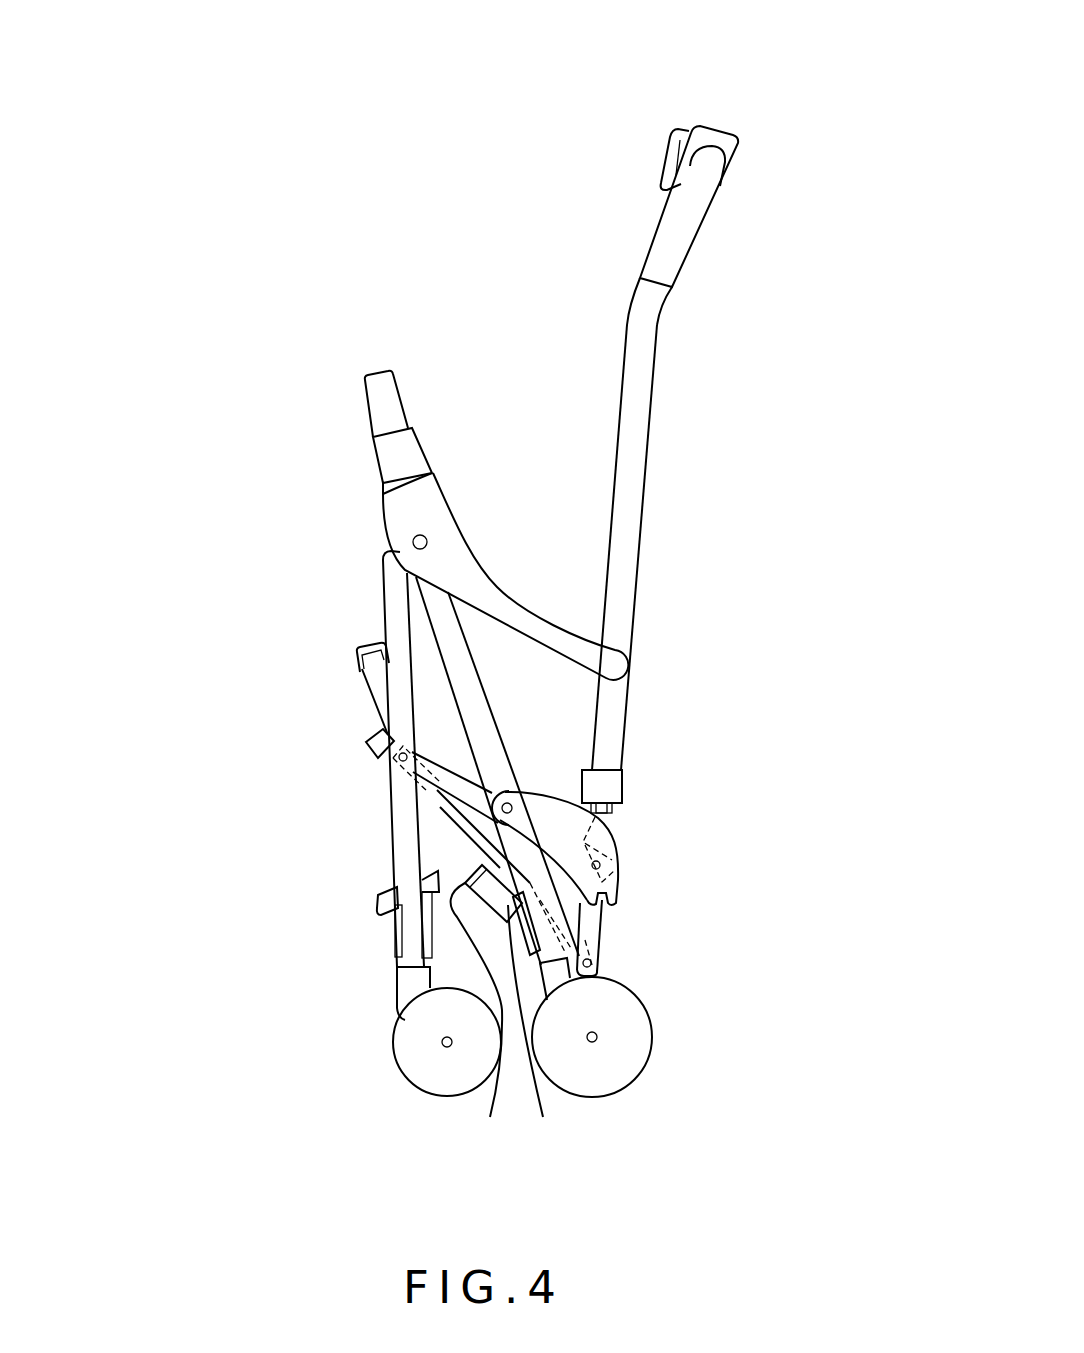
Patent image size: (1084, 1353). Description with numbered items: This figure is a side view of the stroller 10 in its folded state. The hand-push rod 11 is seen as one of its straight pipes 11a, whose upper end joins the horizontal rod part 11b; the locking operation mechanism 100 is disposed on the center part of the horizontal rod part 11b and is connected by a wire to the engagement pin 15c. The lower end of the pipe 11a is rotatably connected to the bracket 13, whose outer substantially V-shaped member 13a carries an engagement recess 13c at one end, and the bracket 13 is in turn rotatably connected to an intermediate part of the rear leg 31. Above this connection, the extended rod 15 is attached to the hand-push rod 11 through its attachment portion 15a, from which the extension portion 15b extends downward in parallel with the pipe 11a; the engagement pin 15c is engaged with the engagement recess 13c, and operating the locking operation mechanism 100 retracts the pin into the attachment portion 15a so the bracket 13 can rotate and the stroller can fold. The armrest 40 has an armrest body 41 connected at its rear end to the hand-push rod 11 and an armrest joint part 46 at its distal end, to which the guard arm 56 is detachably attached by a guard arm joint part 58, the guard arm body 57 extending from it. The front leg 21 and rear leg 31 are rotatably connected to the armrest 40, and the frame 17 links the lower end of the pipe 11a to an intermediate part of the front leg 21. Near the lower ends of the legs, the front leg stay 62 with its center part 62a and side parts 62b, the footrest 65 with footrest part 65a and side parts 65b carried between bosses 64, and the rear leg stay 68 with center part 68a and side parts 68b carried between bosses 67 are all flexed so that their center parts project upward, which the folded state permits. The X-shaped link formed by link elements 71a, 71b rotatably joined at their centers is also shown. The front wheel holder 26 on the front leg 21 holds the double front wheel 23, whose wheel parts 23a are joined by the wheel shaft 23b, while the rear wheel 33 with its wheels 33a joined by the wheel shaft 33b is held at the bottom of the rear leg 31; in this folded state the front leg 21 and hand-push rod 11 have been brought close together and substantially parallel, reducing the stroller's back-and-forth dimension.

The locking operation mechanism 100 is at (722, 130).
The stroller 10 is at (413, 332).
The hand-push rod 11 is at (657, 345).
The pipe 11a is at (637, 421).
The horizontal rod part 11b is at (697, 230).
The guard arm 56 is at (366, 413).
The guard arm body 57 is at (387, 378).
The guard arm joint part 58 is at (412, 452).
The armrest joint part 46 is at (384, 495).
The armrest 40 is at (537, 583).
The armrest body 41 is at (440, 570).
The front leg 21 is at (400, 616).
The front leg stay 62 is at (262, 652).
The center part 62a is at (355, 649).
The side part 62b is at (378, 690).
The frame 17 is at (368, 752).
The footrest 65 is at (278, 877).
The footrest part 65a is at (378, 896).
The side part 65b is at (393, 925).
The boss 64 is at (395, 948).
The front wheel holder 26 is at (398, 993).
The front wheel 23 is at (392, 1057).
The wheel part 23a is at (412, 1072).
The wheel shaft 23b is at (445, 1050).
The rear leg 31 is at (472, 682).
The extended rod 15 is at (622, 770).
The attachment portion 15a is at (582, 780).
The extension portion 15b is at (593, 975).
The engagement pin 15c is at (617, 818).
The bracket 13 is at (608, 842).
The outer substantially V-shaped member 13a is at (685, 849).
The engagement recess 13c is at (620, 908).
The link element 71a is at (450, 814).
The link element 71b is at (600, 933).
The boss 67 is at (607, 952).
The rear wheel 33 is at (653, 1060).
The wheel 33a is at (633, 1078).
The wheel shaft 33b is at (597, 1043).
The rear leg stay 68 is at (595, 1130).
The center part 68a is at (484, 1014).
The side part 68b is at (546, 1025).